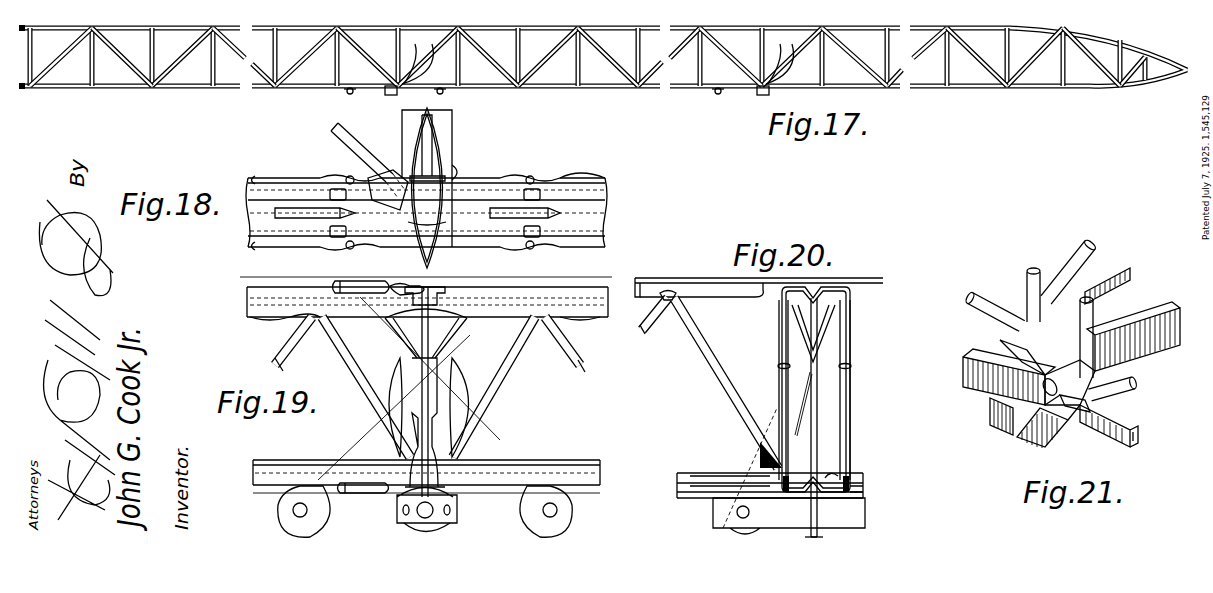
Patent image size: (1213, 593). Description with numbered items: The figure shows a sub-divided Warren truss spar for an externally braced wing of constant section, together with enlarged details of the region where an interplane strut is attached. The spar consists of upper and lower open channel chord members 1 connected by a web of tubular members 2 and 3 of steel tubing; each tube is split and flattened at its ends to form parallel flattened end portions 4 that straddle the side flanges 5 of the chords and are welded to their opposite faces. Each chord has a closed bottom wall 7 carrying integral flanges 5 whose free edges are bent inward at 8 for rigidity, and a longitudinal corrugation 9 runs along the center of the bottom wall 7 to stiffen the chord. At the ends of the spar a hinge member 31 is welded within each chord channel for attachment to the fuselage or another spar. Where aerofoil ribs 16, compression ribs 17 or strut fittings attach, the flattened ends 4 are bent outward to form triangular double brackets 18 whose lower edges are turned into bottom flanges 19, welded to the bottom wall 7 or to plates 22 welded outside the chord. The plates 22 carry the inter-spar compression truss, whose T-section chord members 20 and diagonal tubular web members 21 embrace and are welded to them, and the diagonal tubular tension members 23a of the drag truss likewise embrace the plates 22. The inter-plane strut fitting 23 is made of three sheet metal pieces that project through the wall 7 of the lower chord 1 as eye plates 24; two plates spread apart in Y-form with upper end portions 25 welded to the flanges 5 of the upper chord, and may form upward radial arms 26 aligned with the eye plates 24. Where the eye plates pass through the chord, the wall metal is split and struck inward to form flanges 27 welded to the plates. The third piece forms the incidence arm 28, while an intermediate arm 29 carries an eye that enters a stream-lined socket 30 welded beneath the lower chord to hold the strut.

In FIG. 17, the channel chord member 1 is at (555, 26).
In FIG. 18, the channel chord member 1 is at (250, 186).
In FIG. 19, the channel chord member 1 is at (586, 314).
In FIG. 20, the channel chord member 1 is at (864, 285).
In FIG. 21, the channel chord member 1 is at (1009, 407).
In FIG. 17, the tubular web member 2 is at (312, 62).
In FIG. 18, the tubular web member 2 is at (352, 178).
In FIG. 19, the tubular web member 2 is at (279, 343).
In FIG. 20, the tubular web member 2 is at (780, 337).
In FIG. 17, the tubular web member 3 is at (236, 50).
In FIG. 18, the tubular web member 3 is at (257, 177).
In FIG. 19, the tubular web member 3 is at (345, 354).
In FIG. 20, the tubular web member 3 is at (781, 370).
In FIG. 21, the tubular web member 3 is at (969, 291).
In FIG. 19, the flattened end portion 4 is at (545, 292).
In FIG. 21, the flattened end portion 4 is at (1030, 310).
In FIG. 21, the side flange 5 is at (964, 375).
In FIG. 18, the bottom wall 7 is at (600, 215).
In FIG. 21, the bottom wall 7 is at (1010, 428).
In FIG. 21, the inturned edge 8 is at (1120, 268).
In FIG. 20, the corrugation 9 is at (813, 297).
In FIG. 21, the corrugation 9 is at (992, 404).
In FIG. 21, the aerofoil rib 16 is at (1134, 434).
In FIG. 20, the compression rib 17 is at (770, 490).
In FIG. 20, the triangular double bracket 18 is at (782, 478).
In FIG. 21, the triangular double bracket 18 is at (1046, 300).
In FIG. 20, the bottom flange 19 is at (862, 490).
In FIG. 21, the bottom flange 19 is at (1000, 345).
In FIG. 18, the chord member 20 is at (446, 118).
In FIG. 19, the chord member 20 is at (441, 287).
In FIG. 20, the chord member 20 is at (732, 298).
In FIG. 20, the diagonal tubular web member 21 is at (652, 332).
In FIG. 18, the plate 22 is at (392, 166).
In FIG. 19, the plate 22 is at (396, 285).
In FIG. 20, the plate 22 is at (838, 289).
In FIG. 17, the inter-plane strut fitting 23 is at (410, 56).
In FIG. 19, the inter-plane strut fitting 23 is at (478, 390).
In FIG. 20, the inter-plane strut fitting 23 is at (828, 387).
In FIG. 18, the diagonal tubular tension member 23a is at (338, 133).
In FIG. 19, the diagonal tubular tension member 23a is at (340, 281).
In FIG. 17, the eye plate 24 is at (347, 92).
In FIG. 18, the eye plate 24 is at (286, 208).
In FIG. 19, the eye plate 24 is at (280, 512).
In FIG. 20, the eye plate 24 is at (820, 537).
In FIG. 20, the upper end portion 25 is at (812, 345).
In FIG. 19, the radial arm 26 is at (404, 340).
In FIG. 19, the flange 27 is at (505, 290).
In FIG. 20, the flange 27 is at (835, 477).
In FIG. 18, the incidence arm 28 is at (434, 150).
In FIG. 19, the incidence arm 28 is at (440, 450).
In FIG. 20, the incidence arm 28 is at (767, 440).
In FIG. 18, the arm 29 is at (404, 225).
In FIG. 19, the arm 29 is at (410, 526).
In FIG. 17, the stream-lined socket 30 is at (388, 95).
In FIG. 18, the stream-lined socket 30 is at (458, 172).
In FIG. 19, the stream-lined socket 30 is at (396, 511).
In FIG. 20, the stream-lined socket 30 is at (713, 516).
In FIG. 17, the hinge member 31 is at (23, 25).